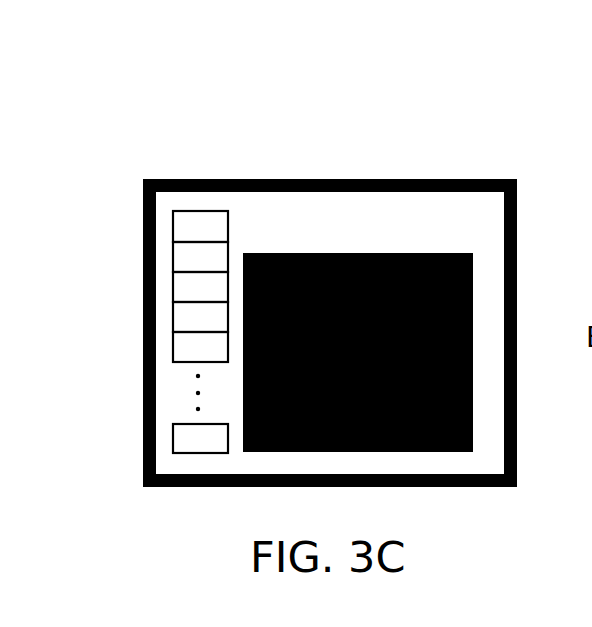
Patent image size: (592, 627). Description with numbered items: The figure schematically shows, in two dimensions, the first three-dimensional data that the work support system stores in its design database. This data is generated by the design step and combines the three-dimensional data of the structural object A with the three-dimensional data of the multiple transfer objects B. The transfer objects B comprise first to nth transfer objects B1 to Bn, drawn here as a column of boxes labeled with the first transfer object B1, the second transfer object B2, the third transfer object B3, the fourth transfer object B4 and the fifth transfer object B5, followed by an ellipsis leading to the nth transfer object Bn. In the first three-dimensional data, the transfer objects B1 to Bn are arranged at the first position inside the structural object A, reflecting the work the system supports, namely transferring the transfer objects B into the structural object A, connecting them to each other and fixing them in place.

The structural object A is at (490, 180).
The transfer objects B is at (76, 213).
The first transfer object B1 is at (183, 229).
The second transfer object B2 is at (183, 261).
The third transfer object B3 is at (183, 292).
The fourth transfer object B4 is at (183, 323).
The fifth transfer object B5 is at (183, 353).
The nth transfer object Bn is at (183, 444).